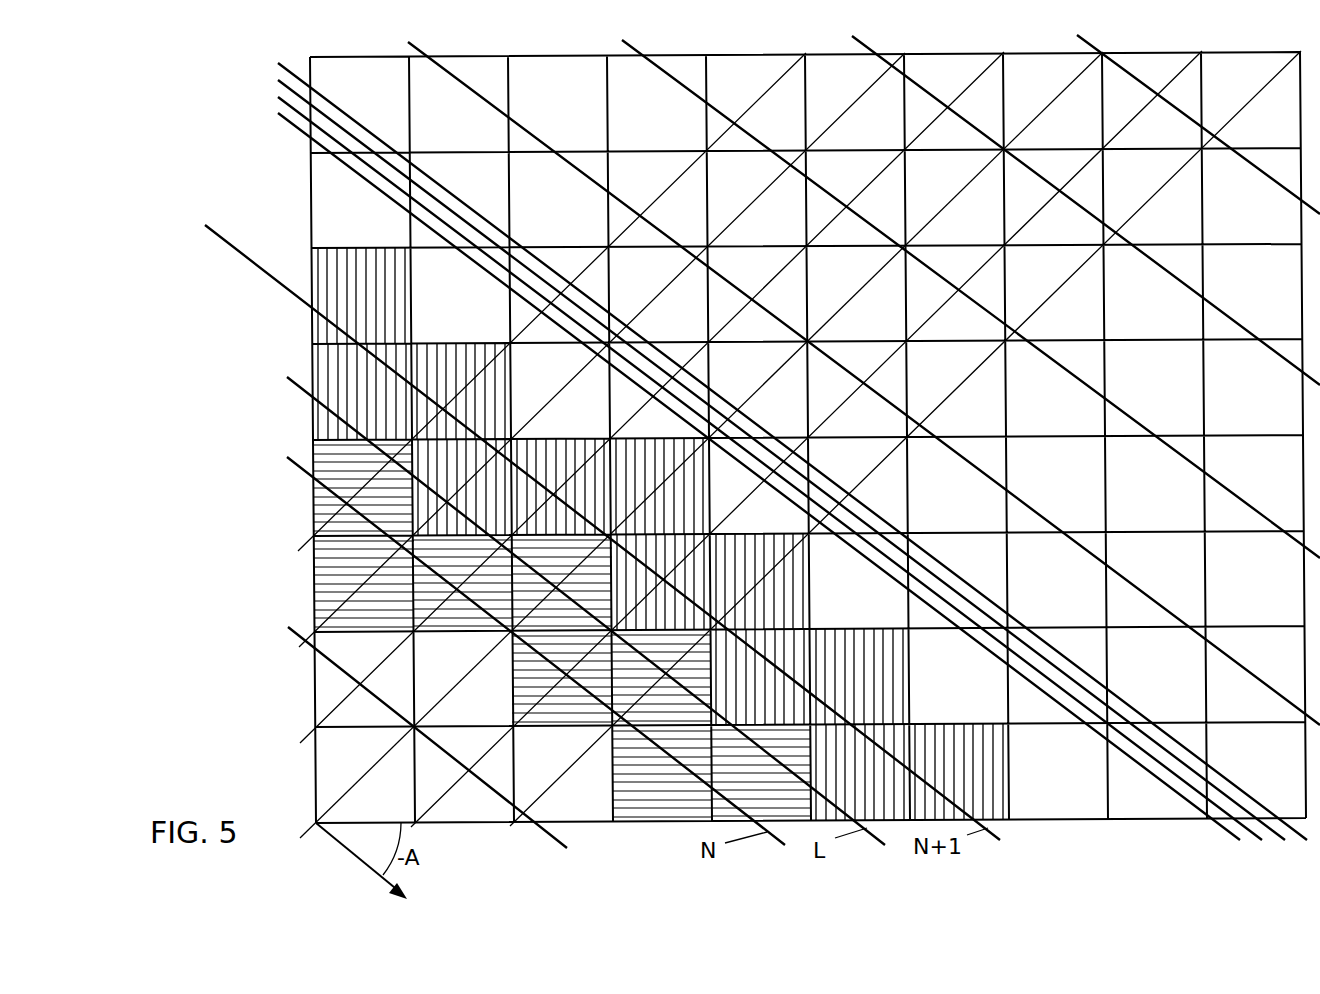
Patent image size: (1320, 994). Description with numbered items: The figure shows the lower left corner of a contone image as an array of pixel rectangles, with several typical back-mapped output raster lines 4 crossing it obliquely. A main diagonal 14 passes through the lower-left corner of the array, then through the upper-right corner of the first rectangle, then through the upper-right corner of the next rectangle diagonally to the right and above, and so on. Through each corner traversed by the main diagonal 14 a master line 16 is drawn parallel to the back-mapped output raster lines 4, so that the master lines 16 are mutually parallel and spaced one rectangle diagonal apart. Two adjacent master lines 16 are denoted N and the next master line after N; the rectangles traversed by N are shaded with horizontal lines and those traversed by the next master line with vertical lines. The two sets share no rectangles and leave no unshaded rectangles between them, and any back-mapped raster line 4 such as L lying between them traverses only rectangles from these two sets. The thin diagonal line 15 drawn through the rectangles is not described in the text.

The back-mapped output raster lines 4 is at (285, 72).
The main diagonal 14 is at (1050, 100).
The pixel diagonal 15 is at (822, 130).
The master line 16 is at (308, 152).